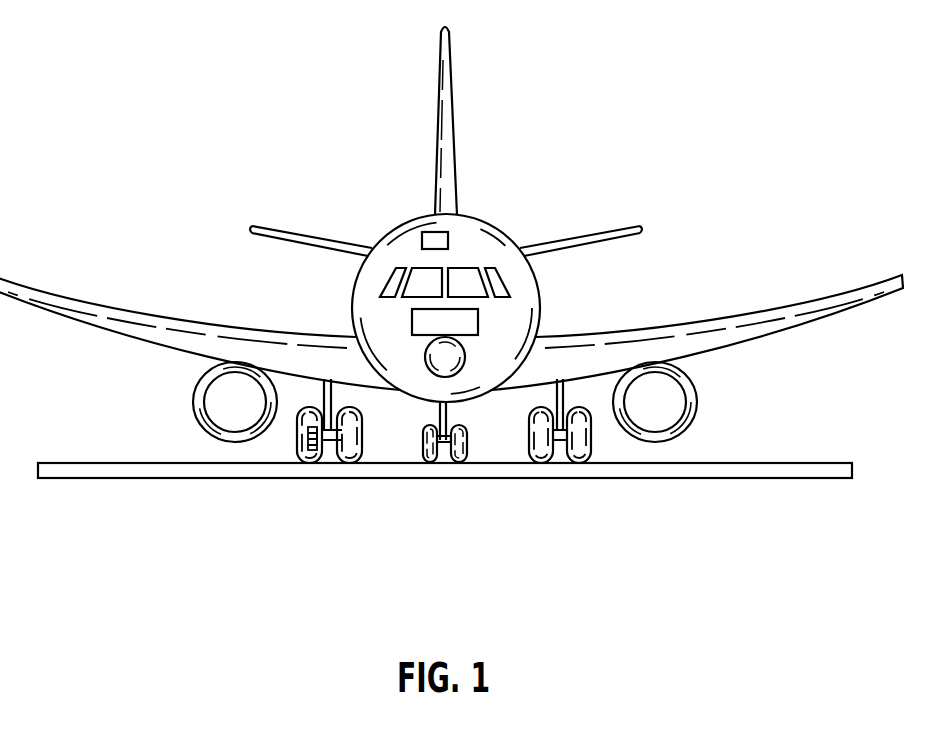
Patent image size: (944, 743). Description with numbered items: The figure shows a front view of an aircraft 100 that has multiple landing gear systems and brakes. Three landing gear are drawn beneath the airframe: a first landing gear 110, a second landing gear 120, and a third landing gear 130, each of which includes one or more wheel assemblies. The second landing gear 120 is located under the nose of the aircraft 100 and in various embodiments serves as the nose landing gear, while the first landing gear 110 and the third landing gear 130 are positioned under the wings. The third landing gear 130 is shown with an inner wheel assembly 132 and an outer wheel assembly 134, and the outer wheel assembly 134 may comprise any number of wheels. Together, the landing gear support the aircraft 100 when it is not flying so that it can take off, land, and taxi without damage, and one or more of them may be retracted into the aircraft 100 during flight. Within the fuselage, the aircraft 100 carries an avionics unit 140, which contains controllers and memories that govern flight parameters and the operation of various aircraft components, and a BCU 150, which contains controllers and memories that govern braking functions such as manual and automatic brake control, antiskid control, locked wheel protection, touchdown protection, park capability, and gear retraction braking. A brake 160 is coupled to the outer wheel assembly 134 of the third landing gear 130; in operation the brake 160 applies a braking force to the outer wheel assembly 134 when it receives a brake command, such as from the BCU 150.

The aircraft 100 is at (289, 70).
The first landing gear 110 is at (593, 447).
The second landing gear 120 is at (472, 452).
The third landing gear 130 is at (278, 450).
The inner wheel assembly 132 is at (355, 465).
The outer wheel assembly 134 is at (310, 465).
The avionics unit 140 is at (449, 240).
The BCU 150 is at (478, 325).
The brake 160 is at (313, 466).